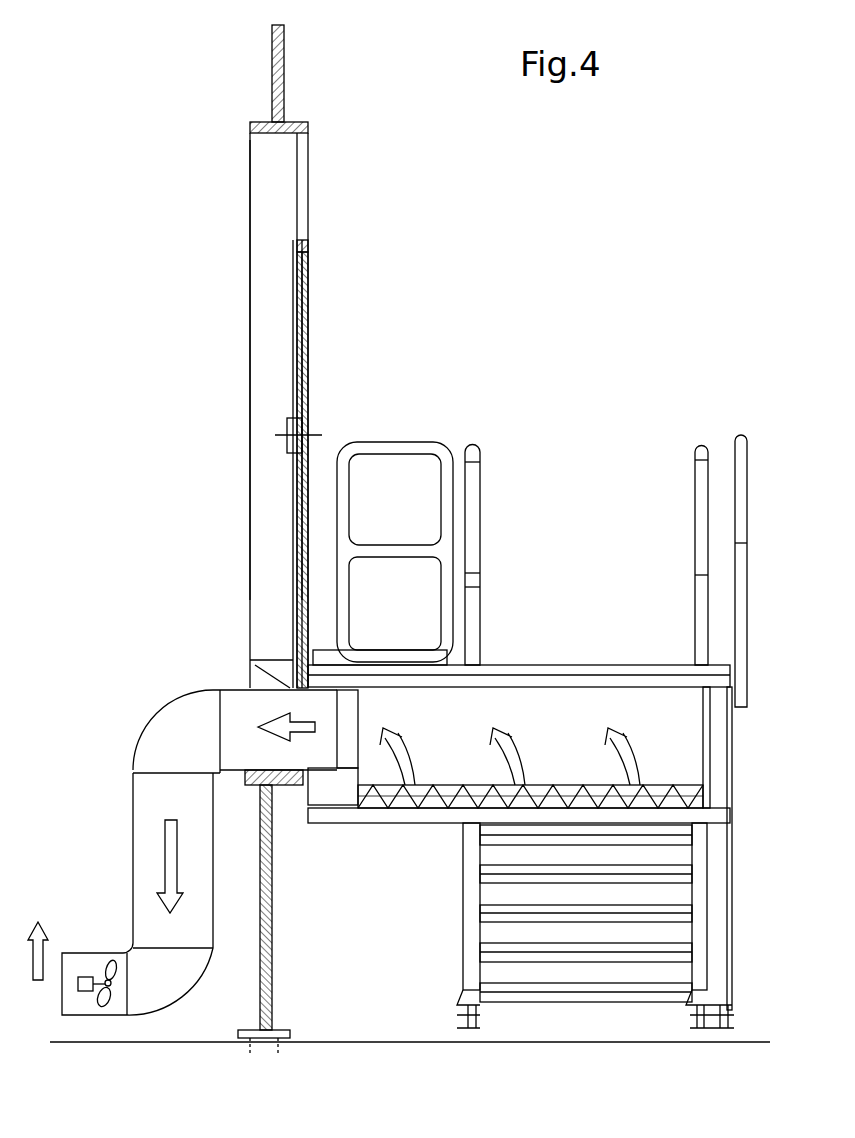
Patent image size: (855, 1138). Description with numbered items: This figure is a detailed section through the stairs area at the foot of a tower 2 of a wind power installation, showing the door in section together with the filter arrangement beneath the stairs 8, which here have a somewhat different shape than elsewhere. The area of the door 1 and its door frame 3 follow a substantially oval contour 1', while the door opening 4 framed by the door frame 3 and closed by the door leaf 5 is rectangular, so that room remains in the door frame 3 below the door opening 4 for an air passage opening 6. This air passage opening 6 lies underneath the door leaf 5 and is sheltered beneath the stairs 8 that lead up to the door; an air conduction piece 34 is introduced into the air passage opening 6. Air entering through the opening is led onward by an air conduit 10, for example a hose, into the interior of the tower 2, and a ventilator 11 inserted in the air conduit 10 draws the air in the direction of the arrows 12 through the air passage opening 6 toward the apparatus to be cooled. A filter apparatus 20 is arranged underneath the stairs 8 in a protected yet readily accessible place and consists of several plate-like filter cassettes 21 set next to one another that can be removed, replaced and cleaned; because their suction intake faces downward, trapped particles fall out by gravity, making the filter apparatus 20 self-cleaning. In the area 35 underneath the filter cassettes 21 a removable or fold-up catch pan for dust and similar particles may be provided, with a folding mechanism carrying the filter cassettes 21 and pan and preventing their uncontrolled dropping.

The area of the door 1 is at (333, 390).
The oval contour 1' is at (292, 943).
The tower 2 is at (285, 80).
The door frame 3 is at (290, 185).
The door opening 4 is at (309, 247).
The door leaf 5 is at (303, 330).
The air passage opening 6 is at (262, 775).
The stairs 8 is at (665, 945).
The air conduit 10 is at (153, 797).
The ventilator 11 is at (100, 955).
The arrows 12 is at (282, 722).
The filter apparatus 20 is at (688, 782).
The filter cassettes 21 is at (420, 806).
The air conduction piece 34 is at (235, 730).
The area underneath filter cassettes 35 is at (693, 820).